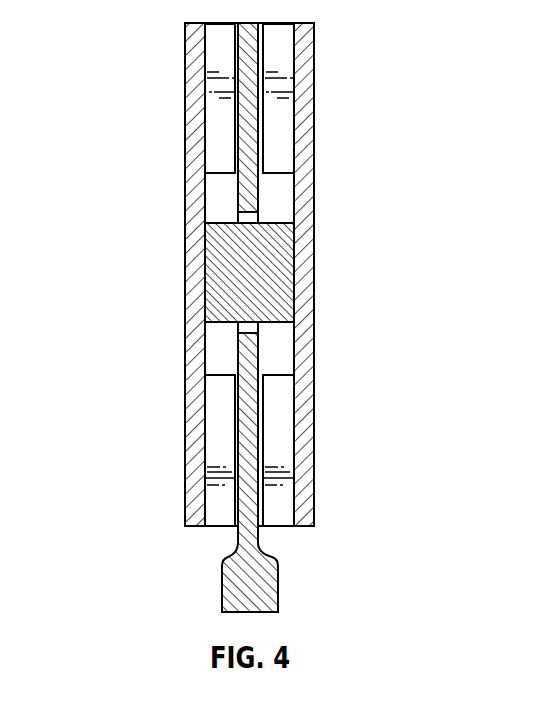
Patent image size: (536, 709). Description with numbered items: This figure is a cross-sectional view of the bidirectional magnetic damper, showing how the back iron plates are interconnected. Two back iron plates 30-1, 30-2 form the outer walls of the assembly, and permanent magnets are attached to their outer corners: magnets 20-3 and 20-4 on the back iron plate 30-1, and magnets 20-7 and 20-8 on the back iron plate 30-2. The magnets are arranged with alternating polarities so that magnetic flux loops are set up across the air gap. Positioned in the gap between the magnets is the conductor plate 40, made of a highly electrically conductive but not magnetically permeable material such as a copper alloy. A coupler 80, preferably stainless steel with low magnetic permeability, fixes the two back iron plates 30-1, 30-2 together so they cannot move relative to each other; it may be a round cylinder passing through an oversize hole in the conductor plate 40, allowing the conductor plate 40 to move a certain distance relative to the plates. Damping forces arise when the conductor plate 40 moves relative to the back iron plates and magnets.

The permanent magnet 20-3 is at (214, 113).
The permanent magnet 20-7 is at (283, 63).
The permanent magnet 20-4 is at (213, 432).
The permanent magnet 20-8 is at (282, 428).
The back iron plate 30-1 is at (194, 203).
The back iron plate 30-2 is at (311, 158).
The coupler 80 is at (275, 282).
The conductor plate 40 is at (257, 587).